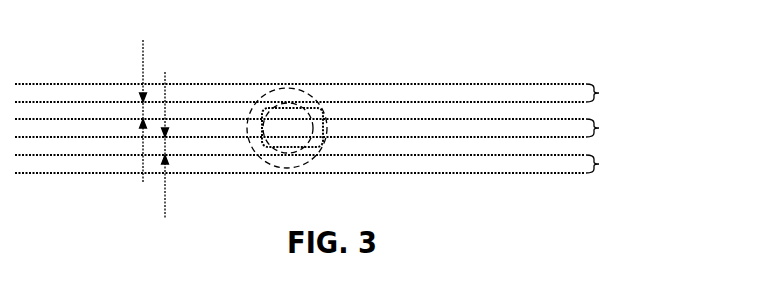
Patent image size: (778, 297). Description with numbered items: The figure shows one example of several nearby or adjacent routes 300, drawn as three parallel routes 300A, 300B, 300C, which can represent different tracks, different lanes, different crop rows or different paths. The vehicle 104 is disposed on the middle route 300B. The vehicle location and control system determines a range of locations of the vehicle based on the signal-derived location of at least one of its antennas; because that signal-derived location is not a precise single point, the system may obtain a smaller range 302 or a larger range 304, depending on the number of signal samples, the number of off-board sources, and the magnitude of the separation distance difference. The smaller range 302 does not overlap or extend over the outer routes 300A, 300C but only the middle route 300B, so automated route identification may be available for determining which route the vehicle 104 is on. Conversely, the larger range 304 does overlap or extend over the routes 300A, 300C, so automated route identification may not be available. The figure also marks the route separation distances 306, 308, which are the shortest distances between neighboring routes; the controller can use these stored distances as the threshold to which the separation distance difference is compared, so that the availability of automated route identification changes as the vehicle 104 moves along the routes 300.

The vehicle 104 is at (309, 110).
The routes 300 is at (343, 110).
The route 300A is at (343, 95).
The route 300B is at (343, 128).
The route 300C is at (343, 163).
The range of locations 302 is at (282, 150).
The range of locations 304 is at (305, 164).
The route separation distance 306 is at (143, 62).
The route separation distance 308 is at (165, 195).